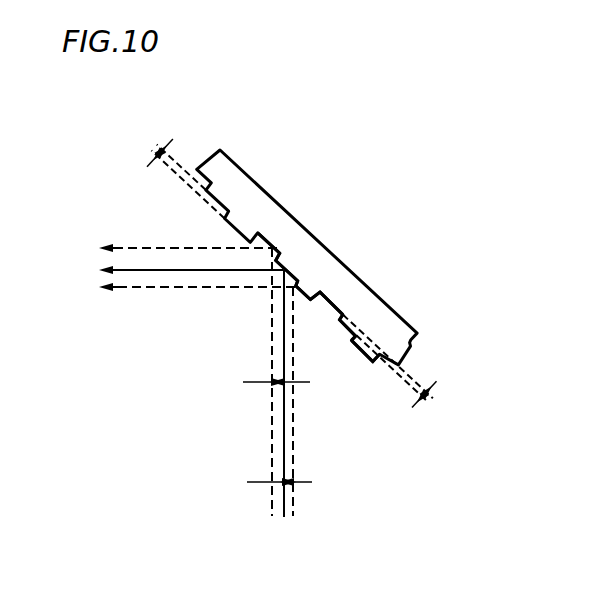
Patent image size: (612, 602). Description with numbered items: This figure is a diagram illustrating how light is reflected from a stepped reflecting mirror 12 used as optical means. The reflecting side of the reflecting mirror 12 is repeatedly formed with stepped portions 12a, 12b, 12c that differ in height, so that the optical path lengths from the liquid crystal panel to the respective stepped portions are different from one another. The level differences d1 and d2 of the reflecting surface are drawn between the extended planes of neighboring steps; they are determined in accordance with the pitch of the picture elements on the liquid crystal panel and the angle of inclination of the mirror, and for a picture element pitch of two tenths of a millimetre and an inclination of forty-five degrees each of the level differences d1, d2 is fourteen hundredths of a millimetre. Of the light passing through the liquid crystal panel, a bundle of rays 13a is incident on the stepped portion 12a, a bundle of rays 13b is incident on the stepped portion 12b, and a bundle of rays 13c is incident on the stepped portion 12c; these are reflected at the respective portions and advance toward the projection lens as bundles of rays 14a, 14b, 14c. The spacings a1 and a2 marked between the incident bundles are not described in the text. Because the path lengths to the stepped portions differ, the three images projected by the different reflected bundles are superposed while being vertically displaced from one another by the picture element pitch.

The reflecting mirror 12 is at (290, 215).
The stepped portion 12a is at (330, 303).
The stepped portion 12b is at (350, 336).
The stepped portion 12c is at (368, 358).
The bundle of rays 13a is at (272, 355).
The bundle of rays 13b is at (284, 323).
The bundle of rays 13c is at (295, 458).
The bundle of rays 14a is at (152, 247).
The bundle of rays 14b is at (190, 272).
The bundle of rays 14c is at (158, 288).
The level difference d1 is at (178, 171).
The level difference d2 is at (403, 377).
The ray spacing a1 is at (275, 390).
The ray spacing a2 is at (290, 485).